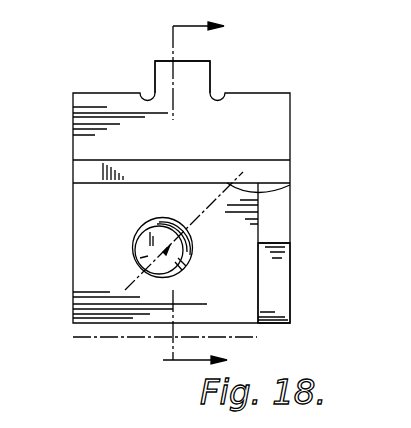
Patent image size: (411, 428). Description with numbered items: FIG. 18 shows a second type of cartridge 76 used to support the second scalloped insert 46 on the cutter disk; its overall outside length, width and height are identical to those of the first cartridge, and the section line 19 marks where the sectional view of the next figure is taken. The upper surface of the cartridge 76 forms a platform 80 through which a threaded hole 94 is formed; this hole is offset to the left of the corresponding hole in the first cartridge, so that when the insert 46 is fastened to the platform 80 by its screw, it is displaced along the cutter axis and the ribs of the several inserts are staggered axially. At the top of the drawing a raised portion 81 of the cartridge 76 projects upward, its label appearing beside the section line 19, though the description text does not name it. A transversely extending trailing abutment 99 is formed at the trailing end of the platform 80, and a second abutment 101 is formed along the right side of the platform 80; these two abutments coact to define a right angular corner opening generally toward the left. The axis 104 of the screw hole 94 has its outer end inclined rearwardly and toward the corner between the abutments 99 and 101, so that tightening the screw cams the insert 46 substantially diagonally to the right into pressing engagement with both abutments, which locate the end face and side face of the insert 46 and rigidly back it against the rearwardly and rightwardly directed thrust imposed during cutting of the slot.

The cartridge 76 is at (118, 100).
The boss 81 is at (200, 72).
The trailing abutment 99 is at (93, 162).
The axis of the screw hole 104 is at (290, 185).
The second abutment 101 is at (285, 221).
The platform 80 is at (248, 291).
The threaded hole 94 is at (148, 224).
The section line 19 is at (167, 197).
The second insert 46 is at (88, 341).